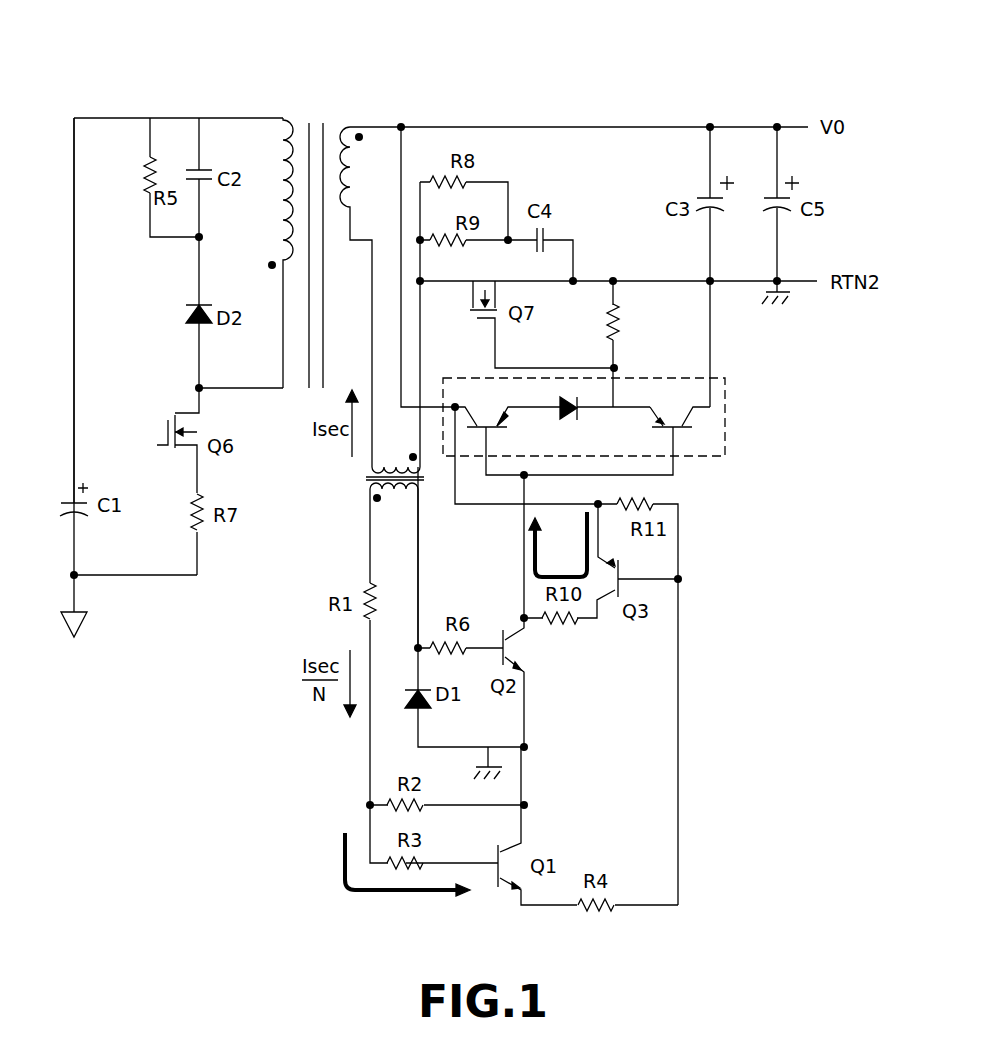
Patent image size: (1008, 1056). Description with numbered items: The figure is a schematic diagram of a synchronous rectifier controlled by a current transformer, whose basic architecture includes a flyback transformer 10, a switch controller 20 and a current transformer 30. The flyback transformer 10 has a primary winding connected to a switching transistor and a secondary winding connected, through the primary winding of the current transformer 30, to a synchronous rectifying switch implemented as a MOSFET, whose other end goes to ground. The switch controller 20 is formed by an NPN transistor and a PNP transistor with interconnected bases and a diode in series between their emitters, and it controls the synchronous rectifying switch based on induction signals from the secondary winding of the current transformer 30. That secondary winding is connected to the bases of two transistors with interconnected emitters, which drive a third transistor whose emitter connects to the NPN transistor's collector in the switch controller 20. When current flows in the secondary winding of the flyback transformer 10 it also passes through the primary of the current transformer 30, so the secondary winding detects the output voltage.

The flyback transformer 10 is at (308, 95).
The switch controller 20 is at (726, 423).
The current transformer 30 is at (350, 483).